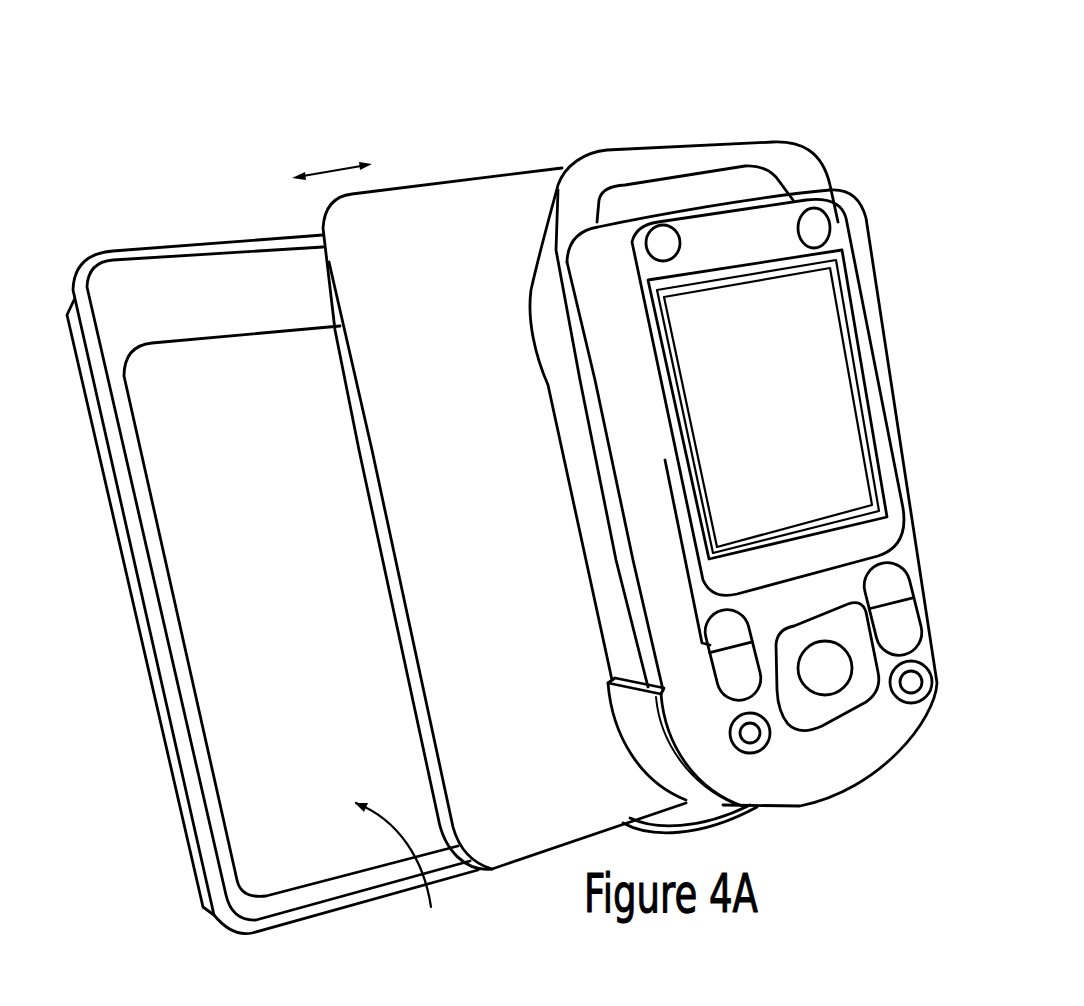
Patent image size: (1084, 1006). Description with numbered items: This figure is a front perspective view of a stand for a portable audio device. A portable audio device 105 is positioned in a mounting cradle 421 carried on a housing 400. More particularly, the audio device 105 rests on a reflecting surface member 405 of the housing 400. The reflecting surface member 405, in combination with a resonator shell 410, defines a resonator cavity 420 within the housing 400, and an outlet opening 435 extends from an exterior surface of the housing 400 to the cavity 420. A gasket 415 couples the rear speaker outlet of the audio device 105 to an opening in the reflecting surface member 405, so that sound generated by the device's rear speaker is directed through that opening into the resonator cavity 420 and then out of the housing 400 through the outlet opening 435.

The housing 400 is at (422, 118).
The portable audio device 105 is at (787, 160).
The reflecting surface member 405 is at (484, 176).
The resonator shell 410 is at (145, 248).
The gasket 415 is at (533, 268).
The resonator cavity 420 is at (400, 875).
The mounting cradle 421 is at (640, 713).
The outlet opening 435 is at (218, 238).